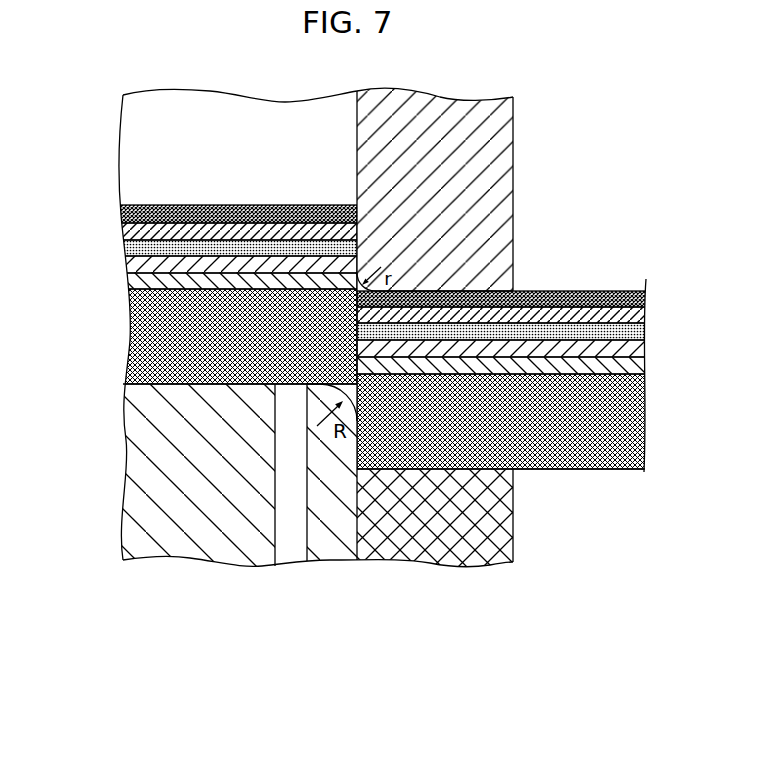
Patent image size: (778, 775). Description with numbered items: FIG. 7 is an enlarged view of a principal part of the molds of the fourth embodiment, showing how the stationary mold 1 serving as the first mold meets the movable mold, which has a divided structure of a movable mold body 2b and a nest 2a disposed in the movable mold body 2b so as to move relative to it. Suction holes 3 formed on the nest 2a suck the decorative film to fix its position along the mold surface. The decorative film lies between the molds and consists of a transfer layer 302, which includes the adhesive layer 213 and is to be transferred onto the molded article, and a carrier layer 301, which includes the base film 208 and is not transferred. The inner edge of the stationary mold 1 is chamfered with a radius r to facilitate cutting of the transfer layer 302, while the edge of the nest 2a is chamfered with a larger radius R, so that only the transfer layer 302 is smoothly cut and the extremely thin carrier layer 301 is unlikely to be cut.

The stationary mold 1 is at (498, 162).
The nest 2a is at (185, 540).
The movable mold body 2b is at (418, 540).
The suction holes 3 is at (290, 555).
The base film 208 is at (165, 365).
The adhesive layer 213 is at (138, 207).
The carrier layer 301 is at (125, 384).
The transfer layer 302 is at (125, 273).